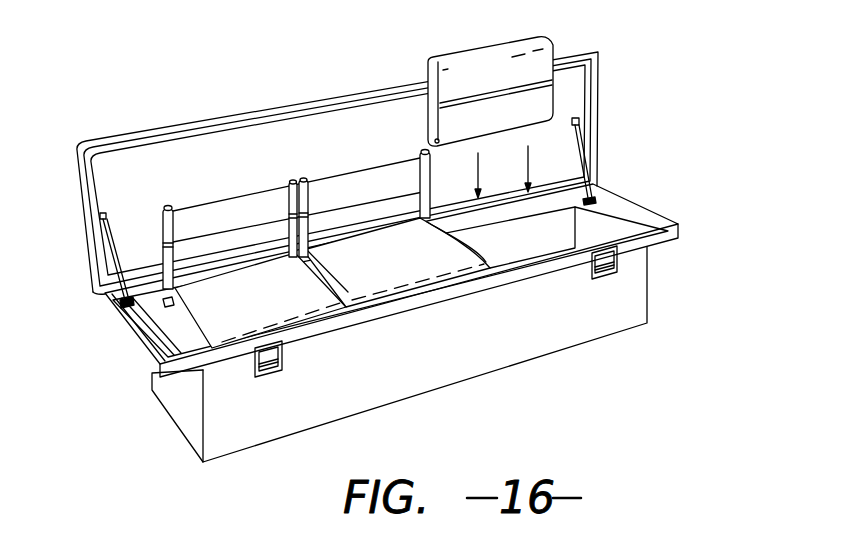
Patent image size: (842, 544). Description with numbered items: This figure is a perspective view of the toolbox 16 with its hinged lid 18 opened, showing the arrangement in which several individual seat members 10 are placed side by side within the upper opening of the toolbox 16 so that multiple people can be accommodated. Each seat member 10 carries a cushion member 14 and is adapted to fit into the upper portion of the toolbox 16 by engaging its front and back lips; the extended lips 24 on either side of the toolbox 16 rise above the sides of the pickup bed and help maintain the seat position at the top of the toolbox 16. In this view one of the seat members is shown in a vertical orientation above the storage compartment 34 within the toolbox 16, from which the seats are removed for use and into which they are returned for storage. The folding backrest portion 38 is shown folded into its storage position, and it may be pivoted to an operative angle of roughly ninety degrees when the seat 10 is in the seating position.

The seat member 10 is at (391, 270).
The cushion member 14 is at (283, 306).
The toolbox 16 is at (593, 323).
The lid 18 is at (356, 112).
The extended lips 24 is at (680, 229).
The storage compartment 34 is at (552, 196).
The folding backrest portion 38 is at (222, 217).